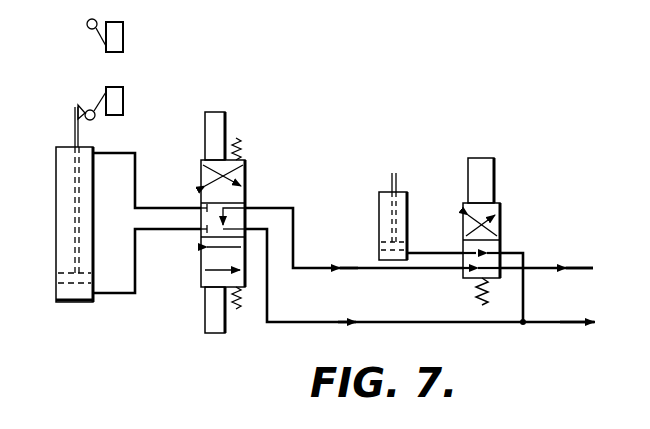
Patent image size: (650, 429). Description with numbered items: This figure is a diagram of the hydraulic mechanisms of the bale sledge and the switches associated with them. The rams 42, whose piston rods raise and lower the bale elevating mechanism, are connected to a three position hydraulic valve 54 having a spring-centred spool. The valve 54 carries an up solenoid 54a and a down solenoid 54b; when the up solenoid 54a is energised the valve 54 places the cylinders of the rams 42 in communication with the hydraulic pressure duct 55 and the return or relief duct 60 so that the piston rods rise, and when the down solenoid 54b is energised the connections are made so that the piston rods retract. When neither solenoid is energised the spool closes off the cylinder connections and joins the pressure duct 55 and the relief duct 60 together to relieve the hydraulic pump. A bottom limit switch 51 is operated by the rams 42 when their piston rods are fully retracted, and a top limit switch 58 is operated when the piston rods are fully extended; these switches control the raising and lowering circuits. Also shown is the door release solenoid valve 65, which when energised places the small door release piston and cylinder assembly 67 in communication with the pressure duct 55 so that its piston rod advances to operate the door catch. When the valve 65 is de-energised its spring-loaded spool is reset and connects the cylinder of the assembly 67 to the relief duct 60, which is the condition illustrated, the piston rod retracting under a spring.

The ram 42 is at (75, 131).
The bottom limit switch 51 is at (123, 97).
The top limit switch 58 is at (123, 33).
The three position hydraulic valve 54 is at (246, 182).
The up solenoid 54a is at (217, 118).
The down solenoid 54b is at (210, 312).
The door release piston and cylinder assembly 67 is at (380, 203).
The door release solenoid valve 65 is at (500, 230).
The hydraulic pressure duct 55 is at (595, 271).
The return or relief duct 60 is at (594, 326).